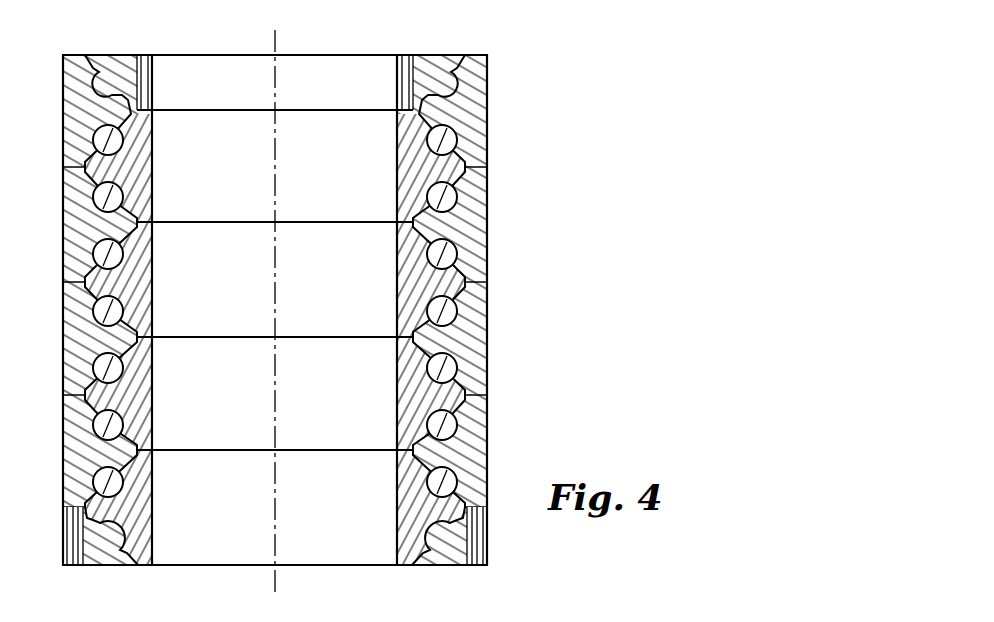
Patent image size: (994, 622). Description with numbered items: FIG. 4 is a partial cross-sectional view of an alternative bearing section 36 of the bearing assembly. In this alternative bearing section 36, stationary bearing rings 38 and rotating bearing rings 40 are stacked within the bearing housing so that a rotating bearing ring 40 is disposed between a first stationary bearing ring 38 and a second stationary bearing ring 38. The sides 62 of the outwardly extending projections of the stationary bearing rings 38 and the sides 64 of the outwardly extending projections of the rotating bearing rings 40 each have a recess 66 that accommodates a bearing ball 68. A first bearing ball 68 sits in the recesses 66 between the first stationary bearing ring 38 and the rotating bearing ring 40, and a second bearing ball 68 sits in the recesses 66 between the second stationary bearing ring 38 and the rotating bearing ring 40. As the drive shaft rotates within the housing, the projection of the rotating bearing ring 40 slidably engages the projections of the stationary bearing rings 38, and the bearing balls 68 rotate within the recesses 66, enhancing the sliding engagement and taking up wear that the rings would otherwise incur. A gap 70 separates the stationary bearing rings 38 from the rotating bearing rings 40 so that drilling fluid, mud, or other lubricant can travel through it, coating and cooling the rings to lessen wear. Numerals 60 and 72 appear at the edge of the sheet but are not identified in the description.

The alternative bearing section 36 is at (557, 241).
The stationary bearing ring 38 is at (78, 445).
The rotating bearing ring 40 is at (100, 370).
The side of outwardly extending projection of stationary bearing ring 62 is at (90, 62).
The side of outwardly extending projection of rotating bearing ring 64 is at (87, 166).
The recess 66 is at (102, 90).
The bearing ball 68 is at (103, 315).
The gap 70 is at (150, 128).
The bearing 60 is at (451, 617).
The spacer 72 is at (490, 617).